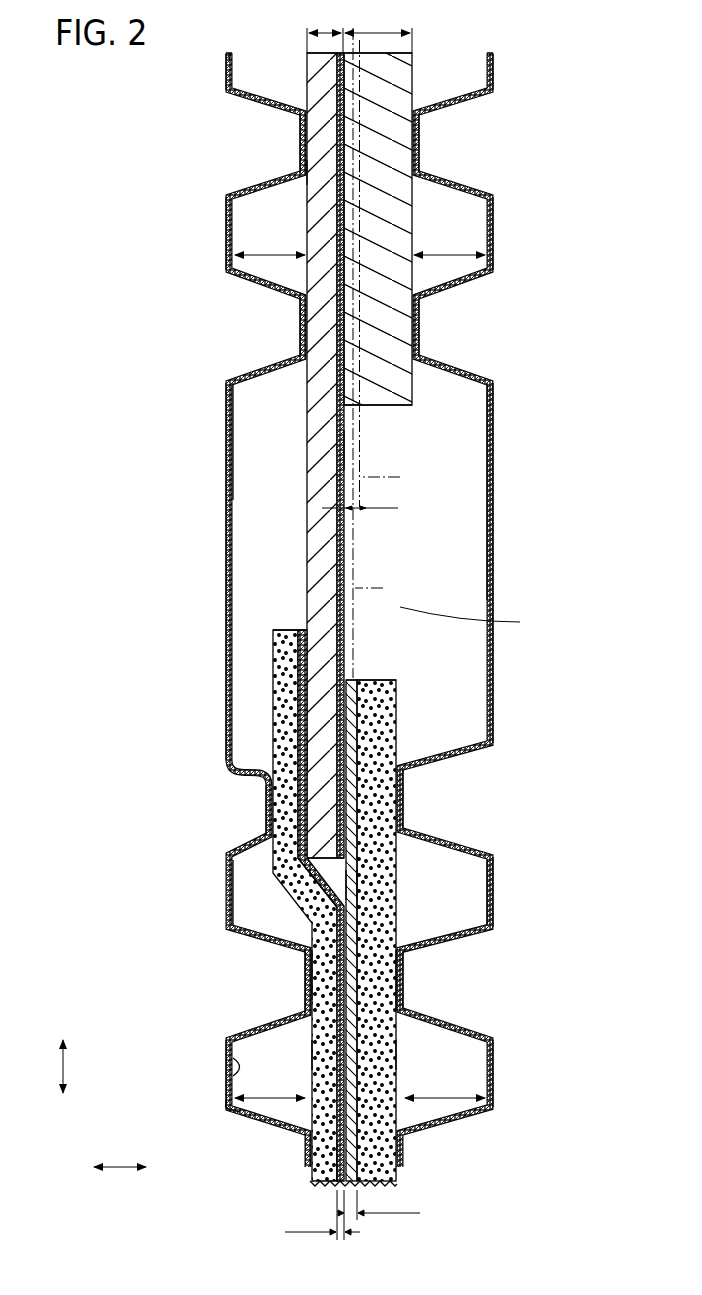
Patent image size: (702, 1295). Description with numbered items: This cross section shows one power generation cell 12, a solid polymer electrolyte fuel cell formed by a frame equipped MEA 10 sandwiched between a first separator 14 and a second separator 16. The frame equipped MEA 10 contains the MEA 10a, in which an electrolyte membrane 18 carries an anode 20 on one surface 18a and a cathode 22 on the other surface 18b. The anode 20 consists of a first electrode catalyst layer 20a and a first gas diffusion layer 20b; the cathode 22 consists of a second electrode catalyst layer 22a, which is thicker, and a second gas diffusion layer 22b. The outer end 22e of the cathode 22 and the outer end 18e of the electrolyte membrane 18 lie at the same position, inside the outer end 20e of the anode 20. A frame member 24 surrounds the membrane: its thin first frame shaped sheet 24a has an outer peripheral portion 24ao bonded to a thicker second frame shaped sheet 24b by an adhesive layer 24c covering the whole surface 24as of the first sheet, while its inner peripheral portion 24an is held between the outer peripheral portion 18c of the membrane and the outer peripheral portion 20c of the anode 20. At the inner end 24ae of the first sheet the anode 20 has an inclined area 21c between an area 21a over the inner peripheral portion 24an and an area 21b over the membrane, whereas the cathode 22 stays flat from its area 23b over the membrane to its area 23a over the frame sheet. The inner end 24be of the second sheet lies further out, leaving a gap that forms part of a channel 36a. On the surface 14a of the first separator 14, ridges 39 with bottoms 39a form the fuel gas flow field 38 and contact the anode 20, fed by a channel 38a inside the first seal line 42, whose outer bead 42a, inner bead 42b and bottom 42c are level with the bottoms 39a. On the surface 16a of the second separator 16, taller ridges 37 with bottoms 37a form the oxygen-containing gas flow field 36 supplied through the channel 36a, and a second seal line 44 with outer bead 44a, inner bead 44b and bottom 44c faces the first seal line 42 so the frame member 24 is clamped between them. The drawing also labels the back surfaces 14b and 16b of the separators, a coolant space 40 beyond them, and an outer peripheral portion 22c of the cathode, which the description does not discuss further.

The frame equipped membrane electrode assembly 10 is at (260, 594).
The membrane electrode assembly 10a is at (304, 1055).
The power generation cell 12 is at (135, 95).
The first separator 14 is at (224, 680).
The surface of the first separator 14a is at (226, 1079).
The upper wall of first housing 14b is at (226, 415).
The second separator 16 is at (496, 692).
The surface of the second separator 16a is at (480, 858).
The upper wall of second housing 16b is at (494, 415).
The electrolyte membrane 18 is at (351, 901).
The one surface of the electrolyte membrane 18a is at (290, 893).
The another surface of the electrolyte membrane 18b is at (262, 878).
The outer peripheral portion of the electrolyte membrane 18c is at (352, 723).
The outer end of the electrolyte membrane 18e is at (351, 678).
The anode 20 is at (241, 887).
The first electrode catalyst layer 20a is at (306, 963).
The first gas diffusion layer 20b is at (306, 983).
The outer peripheral portion of the anode 20c is at (283, 711).
The outer end of the anode 20e is at (283, 628).
The area overlapped with the inner peripheral portion of the first frame shaped shee 21a is at (283, 652).
The area overlapped with the electrolyte membrane 21b is at (325, 1148).
The inclined area 21c is at (300, 890).
The cathode 22 is at (459, 919).
The second electrode catalyst layer 22a is at (360, 985).
The second gas diffusion layer 22b is at (380, 1008).
The cathode side surface 22c is at (402, 748).
The outer end of the cathode 22e is at (376, 680).
The area overlapped with the inner peripheral portion of the first frame shaped shee 23a is at (377, 797).
The area overlapped with the electrolyte membrane 23b is at (385, 1060).
The frame member 24 is at (329, 466).
The first frame shaped sheet 24a is at (314, 223).
The inner end of the first frame shaped sheet 24ae is at (293, 880).
The inner peripheral portion of the first frame shaped sheet 24an is at (300, 757).
The outer peripheral portion of the first frame shaped sheet 24ao is at (288, 180).
The surface of the first frame shaped sheet 24as is at (345, 448).
The second frame shaped sheet 24b is at (380, 147).
The inner end of the second frame shaped sheet 24be is at (392, 408).
The adhesive layer 24c is at (345, 545).
The oxygen-containing gas flow field 36 is at (448, 896).
The channel 36a is at (450, 568).
The ridges 37 is at (305, 1000).
The bottom 37a is at (494, 1096).
The fuel gas flow field 38 is at (263, 896).
The channel 38a is at (253, 497).
The ridges 39 is at (403, 958).
The bottom 39a is at (226, 1100).
The coolant flow path 40 is at (255, 796).
The first seal line 42 is at (252, 84).
The outer bead 42a is at (309, 128).
The inner bead 42b is at (312, 340).
The bottom 42c is at (226, 253).
The second seal line 44 is at (445, 84).
The outer bead 44a is at (340, 145).
The inner bead 44b is at (337, 337).
The bottom 44c is at (493, 246).